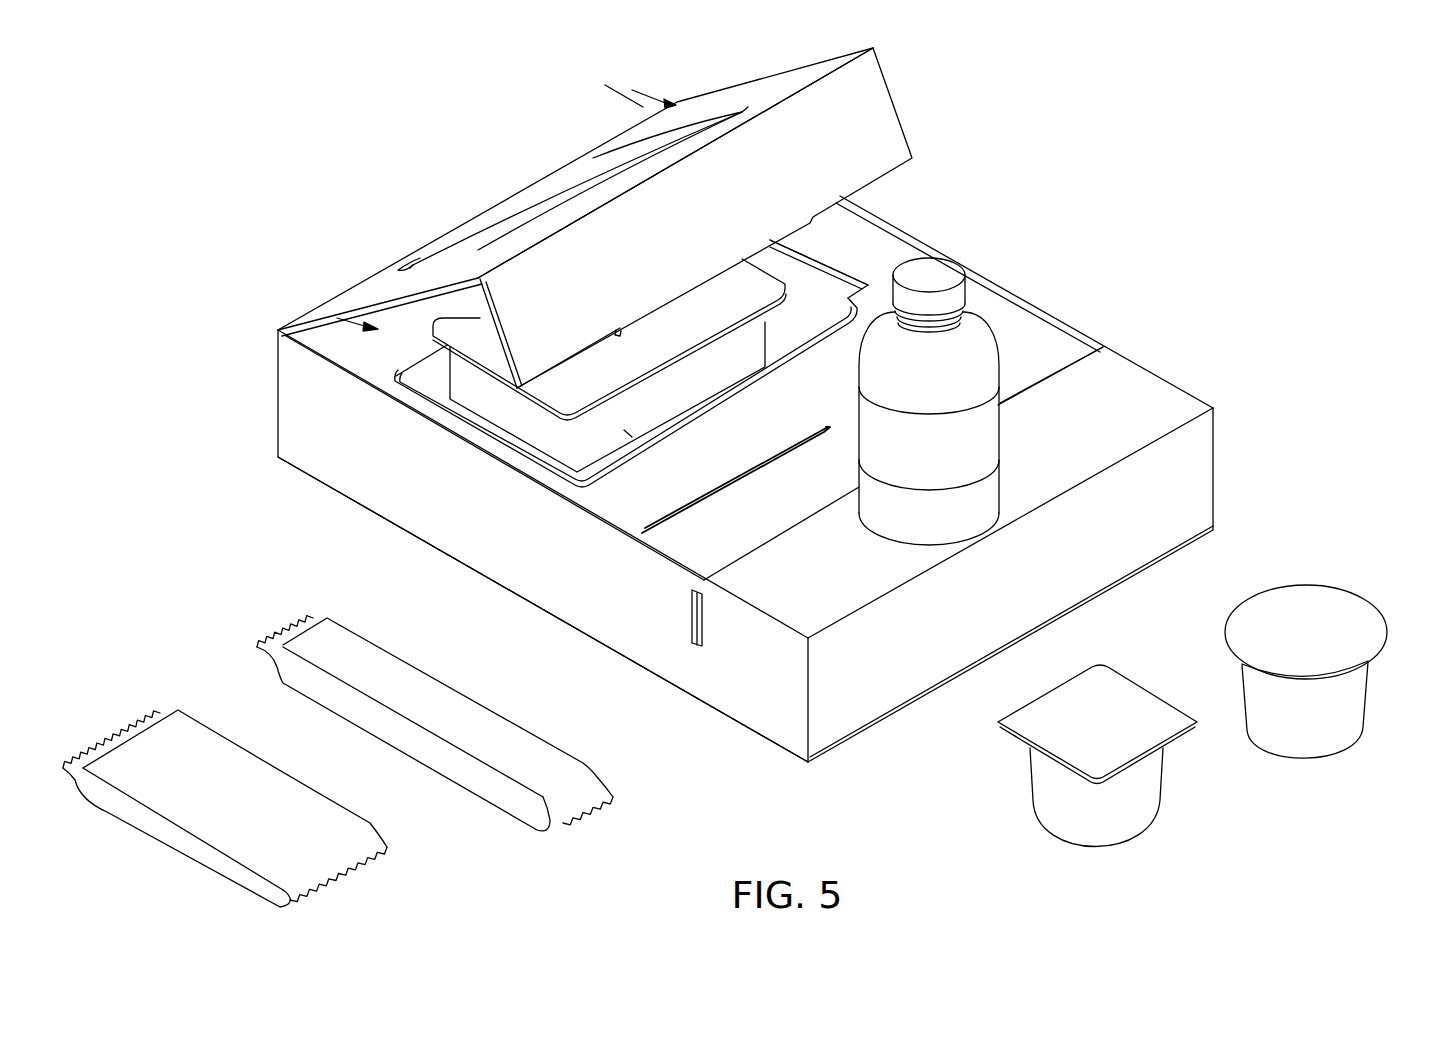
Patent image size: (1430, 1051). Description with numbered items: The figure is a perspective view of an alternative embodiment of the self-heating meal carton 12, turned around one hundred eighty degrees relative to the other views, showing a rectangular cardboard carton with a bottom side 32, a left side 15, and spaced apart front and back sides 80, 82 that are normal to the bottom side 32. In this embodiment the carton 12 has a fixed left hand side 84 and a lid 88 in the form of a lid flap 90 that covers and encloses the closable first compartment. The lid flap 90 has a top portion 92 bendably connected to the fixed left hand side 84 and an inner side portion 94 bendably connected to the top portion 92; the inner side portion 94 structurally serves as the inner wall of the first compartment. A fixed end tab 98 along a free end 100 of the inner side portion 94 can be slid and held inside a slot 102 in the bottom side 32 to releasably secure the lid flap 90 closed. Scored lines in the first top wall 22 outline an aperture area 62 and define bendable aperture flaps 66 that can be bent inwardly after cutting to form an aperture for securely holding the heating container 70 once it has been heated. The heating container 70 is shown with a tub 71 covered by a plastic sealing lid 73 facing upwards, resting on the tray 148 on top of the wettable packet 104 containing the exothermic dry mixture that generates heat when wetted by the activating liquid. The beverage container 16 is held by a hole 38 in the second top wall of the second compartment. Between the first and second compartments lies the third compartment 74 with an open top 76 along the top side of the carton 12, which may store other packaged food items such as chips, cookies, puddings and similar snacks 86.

The carton 12 is at (563, 602).
The left side 15 is at (1180, 527).
The beverage container 16 is at (990, 333).
The first top wall 22 is at (372, 288).
The bottom side 32 is at (337, 315).
The hole 38 is at (888, 540).
The aperture area 62 is at (413, 263).
The aperture flaps 66 is at (517, 227).
The heating container 70 is at (767, 337).
The tub 71 is at (628, 433).
The plastic sealing lid 73 is at (713, 305).
The third compartment 74 is at (992, 310).
The open top 76 is at (735, 537).
The front side 80 is at (885, 233).
The back side 82 is at (480, 553).
The fixed left hand side 84 is at (330, 348).
The snacks 86 is at (233, 868).
The lid 88 is at (622, 85).
The lid flap 90 is at (732, 97).
The top portion 92 is at (640, 136).
The inner side portion 94 is at (873, 83).
The fixed end tab 98 is at (625, 333).
The free end 100 is at (567, 364).
The slot 102 is at (720, 482).
The packet 104 is at (817, 280).
The tray 148 is at (728, 405).